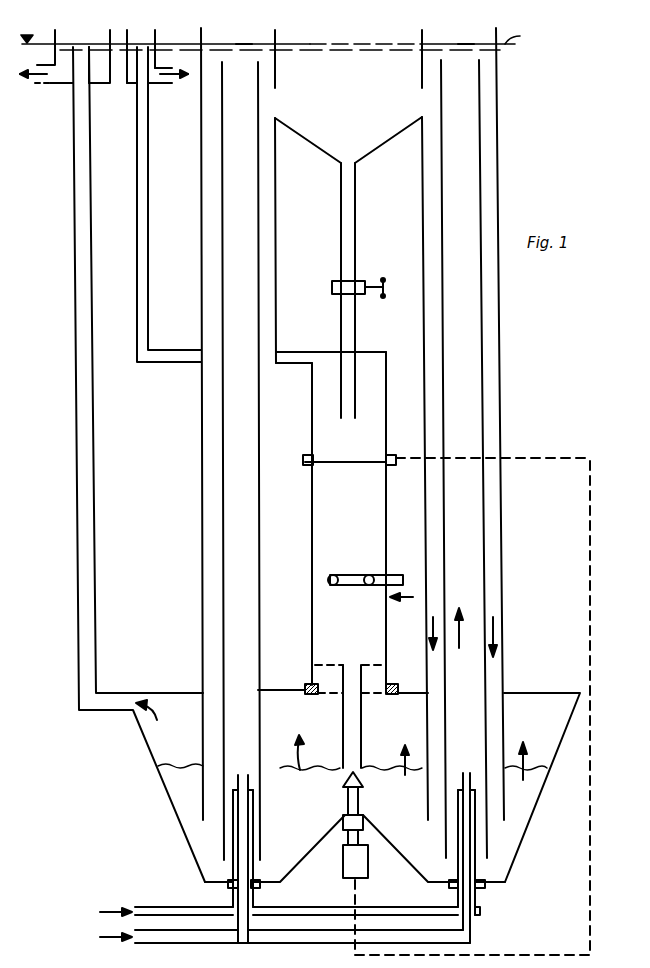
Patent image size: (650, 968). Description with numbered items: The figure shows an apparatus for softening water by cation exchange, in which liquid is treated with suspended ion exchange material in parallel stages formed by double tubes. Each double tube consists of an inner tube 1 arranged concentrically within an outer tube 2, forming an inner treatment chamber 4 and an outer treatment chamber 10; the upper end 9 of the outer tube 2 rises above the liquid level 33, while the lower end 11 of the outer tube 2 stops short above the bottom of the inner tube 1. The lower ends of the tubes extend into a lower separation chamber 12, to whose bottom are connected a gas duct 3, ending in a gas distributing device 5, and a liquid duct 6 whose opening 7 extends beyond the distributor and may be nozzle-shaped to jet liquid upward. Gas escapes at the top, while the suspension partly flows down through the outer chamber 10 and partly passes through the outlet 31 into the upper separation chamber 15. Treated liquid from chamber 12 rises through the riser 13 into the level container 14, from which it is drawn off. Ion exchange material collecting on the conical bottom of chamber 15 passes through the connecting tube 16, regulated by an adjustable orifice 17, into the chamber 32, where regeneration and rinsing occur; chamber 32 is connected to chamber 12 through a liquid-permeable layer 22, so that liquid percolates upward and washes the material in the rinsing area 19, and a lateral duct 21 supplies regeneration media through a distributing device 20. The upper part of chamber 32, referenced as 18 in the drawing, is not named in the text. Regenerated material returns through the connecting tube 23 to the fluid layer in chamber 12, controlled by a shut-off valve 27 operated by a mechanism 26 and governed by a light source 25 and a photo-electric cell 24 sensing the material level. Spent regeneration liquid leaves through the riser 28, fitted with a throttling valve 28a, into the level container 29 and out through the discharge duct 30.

The inner tube 1 is at (243, 190).
The outer tube 2 is at (265, 160).
The gas duct 3 is at (482, 900).
The inner treatment chamber 4 is at (205, 515).
The gas distributing device 5 is at (478, 797).
The liquid duct 6 is at (475, 933).
The opening 7 is at (463, 775).
The upper end of outer tube 9 is at (497, 63).
The outer treatment chamber 10 is at (487, 85).
The lower end of outer tube 11 is at (505, 812).
The lower separation chamber 12 is at (412, 751).
The riser 13 is at (96, 612).
The level container 14 is at (87, 53).
The upper separation chamber 15 is at (372, 142).
The connecting tube 16 is at (350, 222).
The adjustable orifice 17 is at (359, 285).
The upper chamber 18 is at (334, 524).
The rinsing area 19 is at (349, 627).
The distributing device 20 is at (336, 578).
The lateral duct 21 is at (396, 580).
The liquid-permeable layer 22 is at (375, 678).
The connecting tube 23 is at (363, 717).
The photo-electric cell 24 is at (393, 457).
The light source 25 is at (304, 458).
The actuating mechanism 26 is at (368, 865).
The shut-off valve 27 is at (365, 783).
The riser 28 is at (166, 356).
The throttling valve 28a is at (302, 357).
The level container 29 is at (137, 37).
The discharge duct 30 is at (172, 68).
The outlet 31 is at (275, 106).
The regeneration chamber 32 is at (388, 522).
The liquid level 33 is at (244, 38).